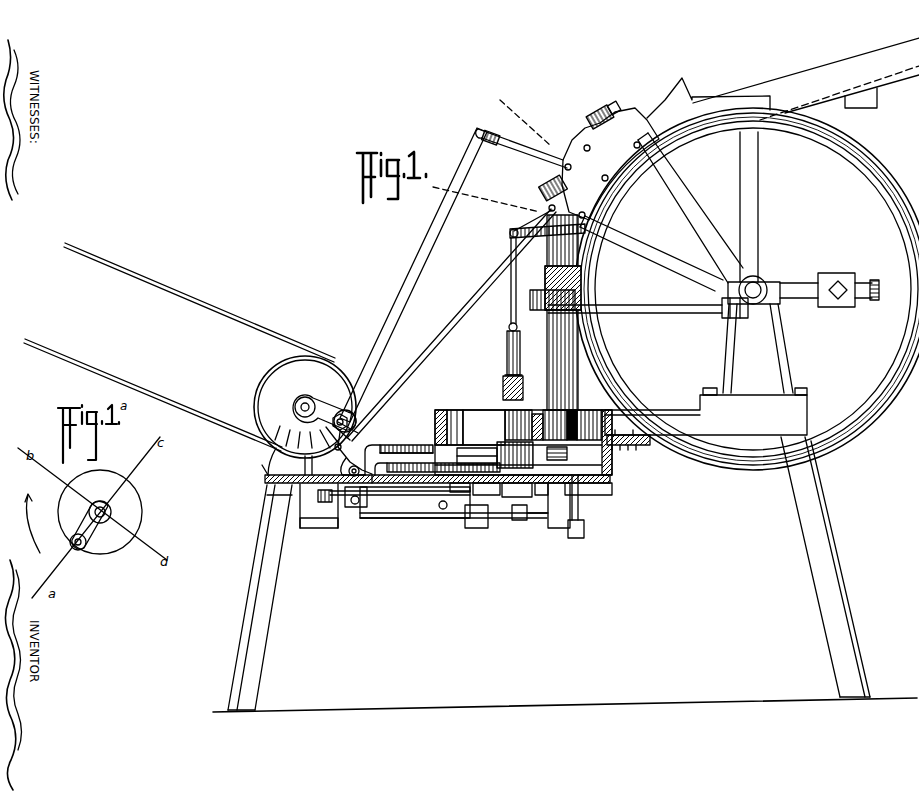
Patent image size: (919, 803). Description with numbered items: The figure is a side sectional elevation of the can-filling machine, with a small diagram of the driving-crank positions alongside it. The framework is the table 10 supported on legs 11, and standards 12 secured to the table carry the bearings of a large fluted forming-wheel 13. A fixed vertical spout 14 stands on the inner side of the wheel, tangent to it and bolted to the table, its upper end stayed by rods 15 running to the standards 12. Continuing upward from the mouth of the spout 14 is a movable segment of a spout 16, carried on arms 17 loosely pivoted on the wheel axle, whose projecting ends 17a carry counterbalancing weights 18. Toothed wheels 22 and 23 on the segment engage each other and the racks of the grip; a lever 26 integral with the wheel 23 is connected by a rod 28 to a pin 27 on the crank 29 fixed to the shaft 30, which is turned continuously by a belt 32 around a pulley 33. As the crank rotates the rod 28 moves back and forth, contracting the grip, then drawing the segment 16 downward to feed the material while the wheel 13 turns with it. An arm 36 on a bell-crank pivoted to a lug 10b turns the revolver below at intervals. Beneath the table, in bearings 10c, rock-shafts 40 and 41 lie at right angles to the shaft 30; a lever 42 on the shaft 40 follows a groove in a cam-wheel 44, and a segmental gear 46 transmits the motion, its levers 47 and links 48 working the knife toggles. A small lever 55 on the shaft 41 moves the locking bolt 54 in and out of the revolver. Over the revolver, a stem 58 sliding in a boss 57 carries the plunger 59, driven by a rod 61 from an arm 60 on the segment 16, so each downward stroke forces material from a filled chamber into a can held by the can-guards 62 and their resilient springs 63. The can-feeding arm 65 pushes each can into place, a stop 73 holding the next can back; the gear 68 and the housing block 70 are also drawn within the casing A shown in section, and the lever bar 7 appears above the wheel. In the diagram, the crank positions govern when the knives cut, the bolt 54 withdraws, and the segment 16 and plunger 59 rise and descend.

In FIG. 1, the lever bar 7 is at (783, 79).
In FIG. 1, the table 10 is at (248, 487).
In FIG. 1, the lug 10b is at (565, 530).
In FIG. 1, the bearings 10c is at (478, 528).
In FIG. 1, the legs 11 is at (272, 594).
In FIG. 1, the standards 12 is at (758, 262).
In FIG. 1, the fluted forming-wheel 13 is at (898, 333).
In FIG. 1, the spout 14 is at (563, 312).
In FIG. 1, the rods 15 is at (639, 308).
In FIG. 1, the segment of a spout 16 is at (610, 164).
In FIG. 1, the arms 17 is at (661, 212).
In FIG. 1, the projecting ends of arms 17a is at (800, 300).
In FIG. 1, the weights 18 is at (840, 273).
In FIG. 1, the toothed wheel 22 is at (578, 140).
In FIG. 1, the toothed wheel 23 is at (543, 170).
In FIG. 1, the lever 26 is at (512, 143).
In FIG. 1, the pin 27 is at (358, 408).
In FIG. 1, the rod 28 is at (410, 280).
In FIG. 1, the crank 29 is at (329, 419).
In FIG. 1a, the crank 29 is at (94, 538).
In FIG. 1, the shaft 30 is at (300, 407).
In FIG. 1a, the shaft 30 is at (112, 512).
In FIG. 1, the belt 32 is at (179, 347).
In FIG. 1, the pulley 33 is at (318, 358).
In FIG. 1, the arm 36 is at (385, 388).
In FIG. 1, the rock-shaft 40 is at (428, 520).
In FIG. 1, the rock-shaft 41 is at (540, 520).
In FIG. 1, the lever 42 is at (306, 465).
In FIG. 1a, the cam-wheel 44 is at (138, 530).
In FIG. 1, the segmental gear 46 is at (591, 537).
In FIG. 1, the levers 47 is at (582, 510).
In FIG. 1, the links 48 is at (608, 486).
In FIG. 1, the bolt 54 is at (517, 488).
In FIG. 1, the small lever 55 is at (516, 524).
In FIG. 1, the boss 57 is at (504, 385).
In FIG. 1, the stem 58 is at (507, 357).
In FIG. 1, the plunger 59 is at (503, 393).
In FIG. 1, the arm 60 is at (540, 238).
In FIG. 1, the rod 61 is at (511, 295).
In FIG. 1, the can-guards 62 is at (512, 442).
In FIG. 1, the resilient springs 63 is at (470, 448).
In FIG. 1, the arm 65 is at (443, 424).
In FIG. 1, the gear 68 is at (557, 460).
In FIG. 1, the housing block 70 is at (460, 420).
In FIG. 1, the stop 73 is at (396, 492).
In FIG. 1, the casing A is at (425, 474).